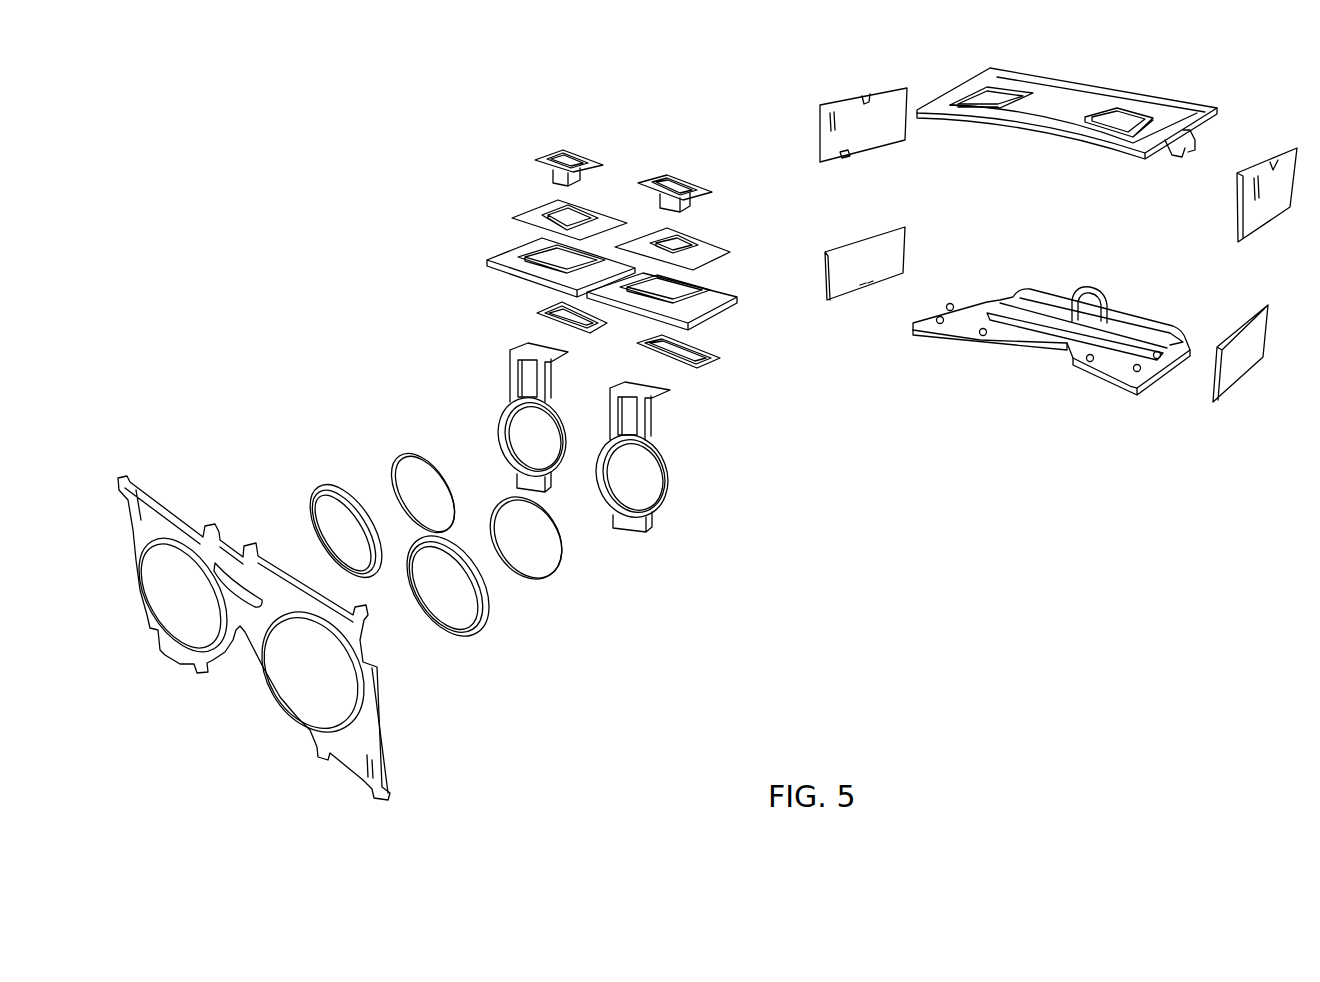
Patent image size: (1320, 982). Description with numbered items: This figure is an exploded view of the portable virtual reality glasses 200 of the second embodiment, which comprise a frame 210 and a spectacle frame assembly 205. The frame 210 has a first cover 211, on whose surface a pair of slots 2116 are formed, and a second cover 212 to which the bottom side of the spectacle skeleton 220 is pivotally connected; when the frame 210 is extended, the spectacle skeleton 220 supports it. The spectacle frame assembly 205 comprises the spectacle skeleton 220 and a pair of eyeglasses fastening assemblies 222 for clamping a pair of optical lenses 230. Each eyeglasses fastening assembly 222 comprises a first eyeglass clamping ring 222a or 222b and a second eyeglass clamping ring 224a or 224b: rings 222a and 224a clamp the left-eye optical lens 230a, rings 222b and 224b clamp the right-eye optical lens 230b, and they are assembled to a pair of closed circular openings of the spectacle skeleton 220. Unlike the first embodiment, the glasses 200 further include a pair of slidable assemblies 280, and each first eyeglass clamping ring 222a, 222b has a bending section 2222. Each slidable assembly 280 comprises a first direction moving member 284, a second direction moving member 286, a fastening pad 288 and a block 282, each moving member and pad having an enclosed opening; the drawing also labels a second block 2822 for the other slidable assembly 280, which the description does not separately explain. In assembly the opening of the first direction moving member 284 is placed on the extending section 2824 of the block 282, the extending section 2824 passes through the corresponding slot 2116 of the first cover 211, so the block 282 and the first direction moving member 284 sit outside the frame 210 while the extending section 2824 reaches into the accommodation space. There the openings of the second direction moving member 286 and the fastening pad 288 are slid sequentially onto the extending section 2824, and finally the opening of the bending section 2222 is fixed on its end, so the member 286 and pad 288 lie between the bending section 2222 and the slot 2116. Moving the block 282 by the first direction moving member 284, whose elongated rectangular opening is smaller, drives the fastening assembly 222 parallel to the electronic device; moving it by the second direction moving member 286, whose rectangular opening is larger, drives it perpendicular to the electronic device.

The portable virtual reality glasses 200 is at (198, 93).
The spectacle frame assembly 205 is at (465, 800).
The frame 210 is at (833, 403).
The first cover 211 is at (1147, 152).
The slot 2116 is at (988, 93).
The second cover 212 is at (990, 297).
The spectacle skeleton 220 is at (380, 723).
The eyeglasses fastening assembly 222 is at (460, 373).
The first eyeglass clamping ring 222a is at (668, 498).
The first eyeglass clamping ring 222b is at (560, 485).
The bending section 2222 is at (517, 348).
The second eyeglass clamping ring 224a is at (477, 630).
The second eyeglass clamping ring 224b is at (313, 492).
The optical lens 230 is at (367, 410).
The left-eye optical lens 230a is at (550, 580).
The right-eye optical lens 230b is at (405, 453).
The slidable assembly 280 is at (455, 112).
The block 282 is at (542, 152).
The sensor chip 2822 is at (680, 180).
The extending section 2824 is at (552, 177).
The first direction moving member 284 is at (730, 250).
The second direction moving member 286 is at (748, 298).
The fastening pad 288 is at (707, 362).